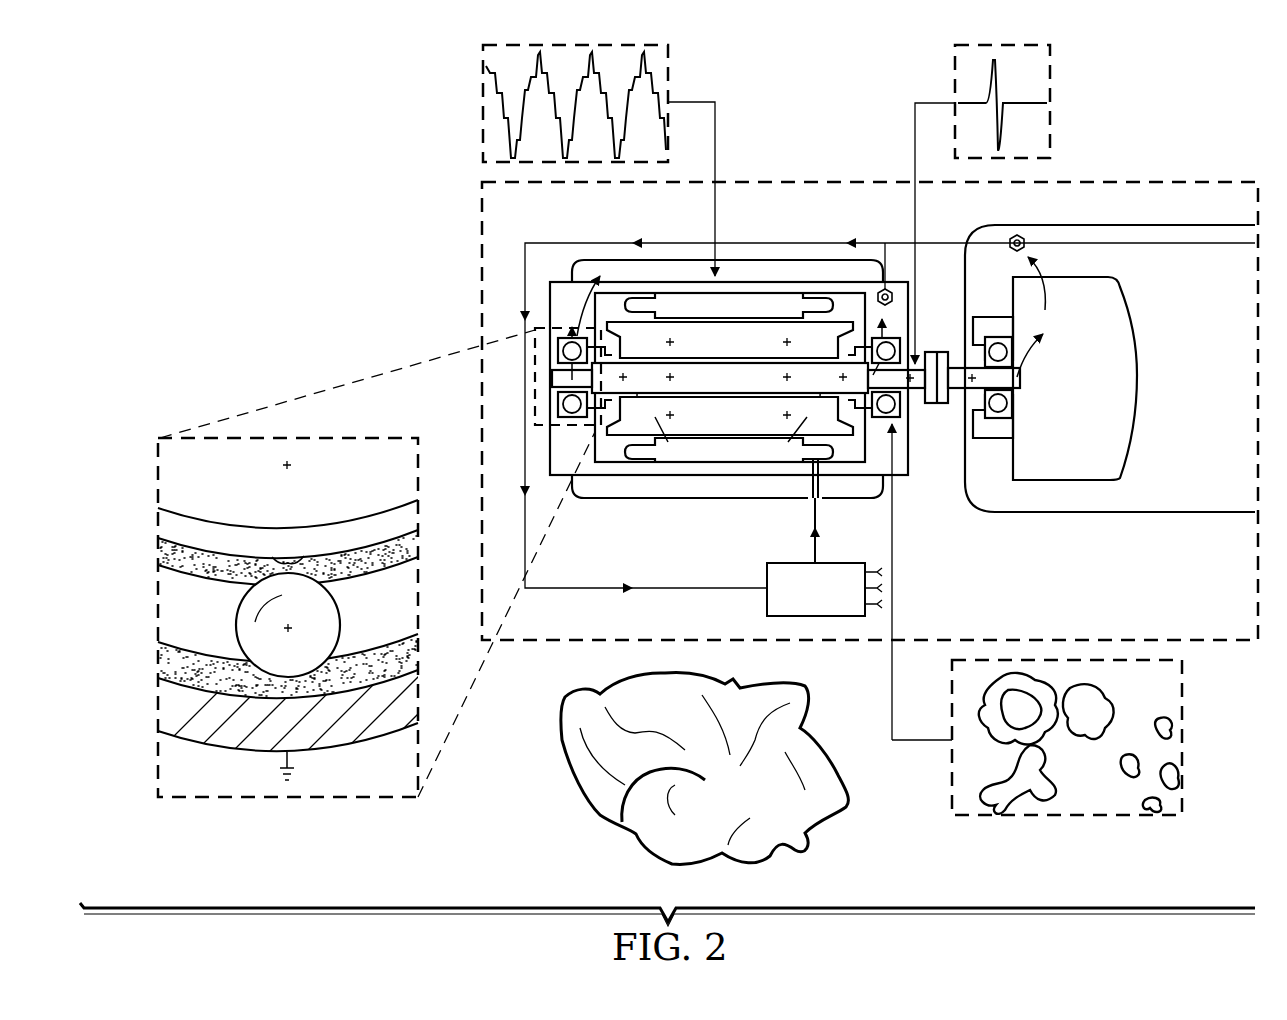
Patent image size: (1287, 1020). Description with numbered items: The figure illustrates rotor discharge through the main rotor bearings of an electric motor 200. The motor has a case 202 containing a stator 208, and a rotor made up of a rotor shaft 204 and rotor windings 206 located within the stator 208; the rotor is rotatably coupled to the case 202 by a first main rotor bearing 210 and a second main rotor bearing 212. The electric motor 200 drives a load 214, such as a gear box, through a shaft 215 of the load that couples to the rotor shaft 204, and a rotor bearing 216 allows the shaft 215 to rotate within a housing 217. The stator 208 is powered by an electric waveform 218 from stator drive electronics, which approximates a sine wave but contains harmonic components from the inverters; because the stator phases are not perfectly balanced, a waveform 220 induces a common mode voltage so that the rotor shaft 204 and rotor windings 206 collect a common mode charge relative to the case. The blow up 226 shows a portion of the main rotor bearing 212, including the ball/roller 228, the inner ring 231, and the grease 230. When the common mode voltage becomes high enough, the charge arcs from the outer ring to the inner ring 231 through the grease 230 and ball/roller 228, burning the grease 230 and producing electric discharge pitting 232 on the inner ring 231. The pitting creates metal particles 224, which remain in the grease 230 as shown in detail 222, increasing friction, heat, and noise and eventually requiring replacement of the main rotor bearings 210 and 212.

The electric motor 200 is at (288, 194).
The case 202 is at (550, 300).
The rotor shaft 204 is at (688, 375).
The rotor windings 206 is at (733, 333).
The stator 208 is at (783, 303).
The first main rotor bearing 210 is at (907, 390).
The second main rotor bearing 212 is at (560, 365).
The load 214 is at (1100, 391).
The shaft of the load 215 is at (1017, 387).
The rotor bearing 216 is at (1003, 335).
The housing 217 is at (1127, 512).
The electric waveform 218 is at (483, 102).
The waveform 220 is at (1052, 78).
The detail 222 is at (1083, 818).
The metal particles 224 is at (570, 762).
The blow up 226 is at (341, 563).
The ball/roller 228 is at (238, 612).
The grease 230 is at (160, 552).
The inner ring 231 is at (160, 524).
The electric discharge pitting 232 is at (285, 553).